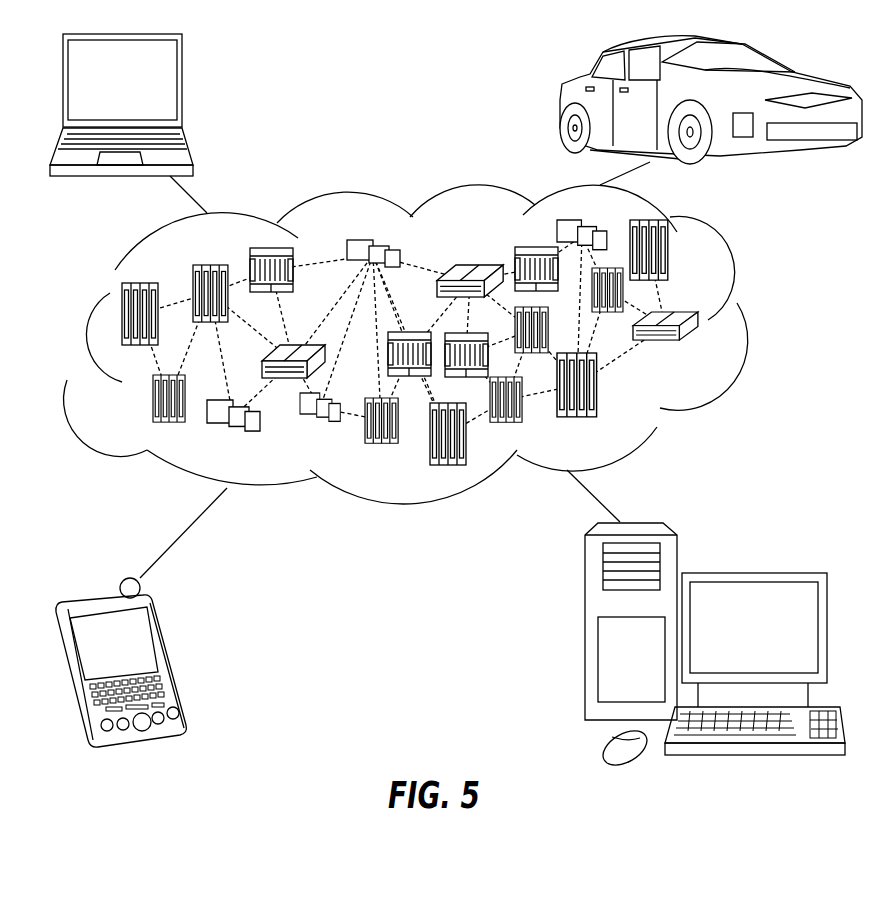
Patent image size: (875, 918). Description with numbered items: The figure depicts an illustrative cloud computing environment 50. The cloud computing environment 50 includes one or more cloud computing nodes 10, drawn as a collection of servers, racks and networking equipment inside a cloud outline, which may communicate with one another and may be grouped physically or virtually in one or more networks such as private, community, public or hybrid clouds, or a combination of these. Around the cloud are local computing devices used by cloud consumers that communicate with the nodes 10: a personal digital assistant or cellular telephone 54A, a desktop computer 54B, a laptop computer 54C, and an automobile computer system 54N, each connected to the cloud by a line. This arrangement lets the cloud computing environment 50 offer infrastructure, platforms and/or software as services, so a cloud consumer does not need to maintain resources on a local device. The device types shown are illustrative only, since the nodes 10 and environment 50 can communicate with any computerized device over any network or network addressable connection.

The cloud computing nodes 10 is at (706, 350).
The cloud computing environment 50 is at (755, 324).
The personal digital assistant or cellular telephone 54A is at (176, 657).
The desktop computer 54B is at (753, 573).
The laptop computer 54C is at (184, 88).
The automobile computer system 54N is at (560, 100).